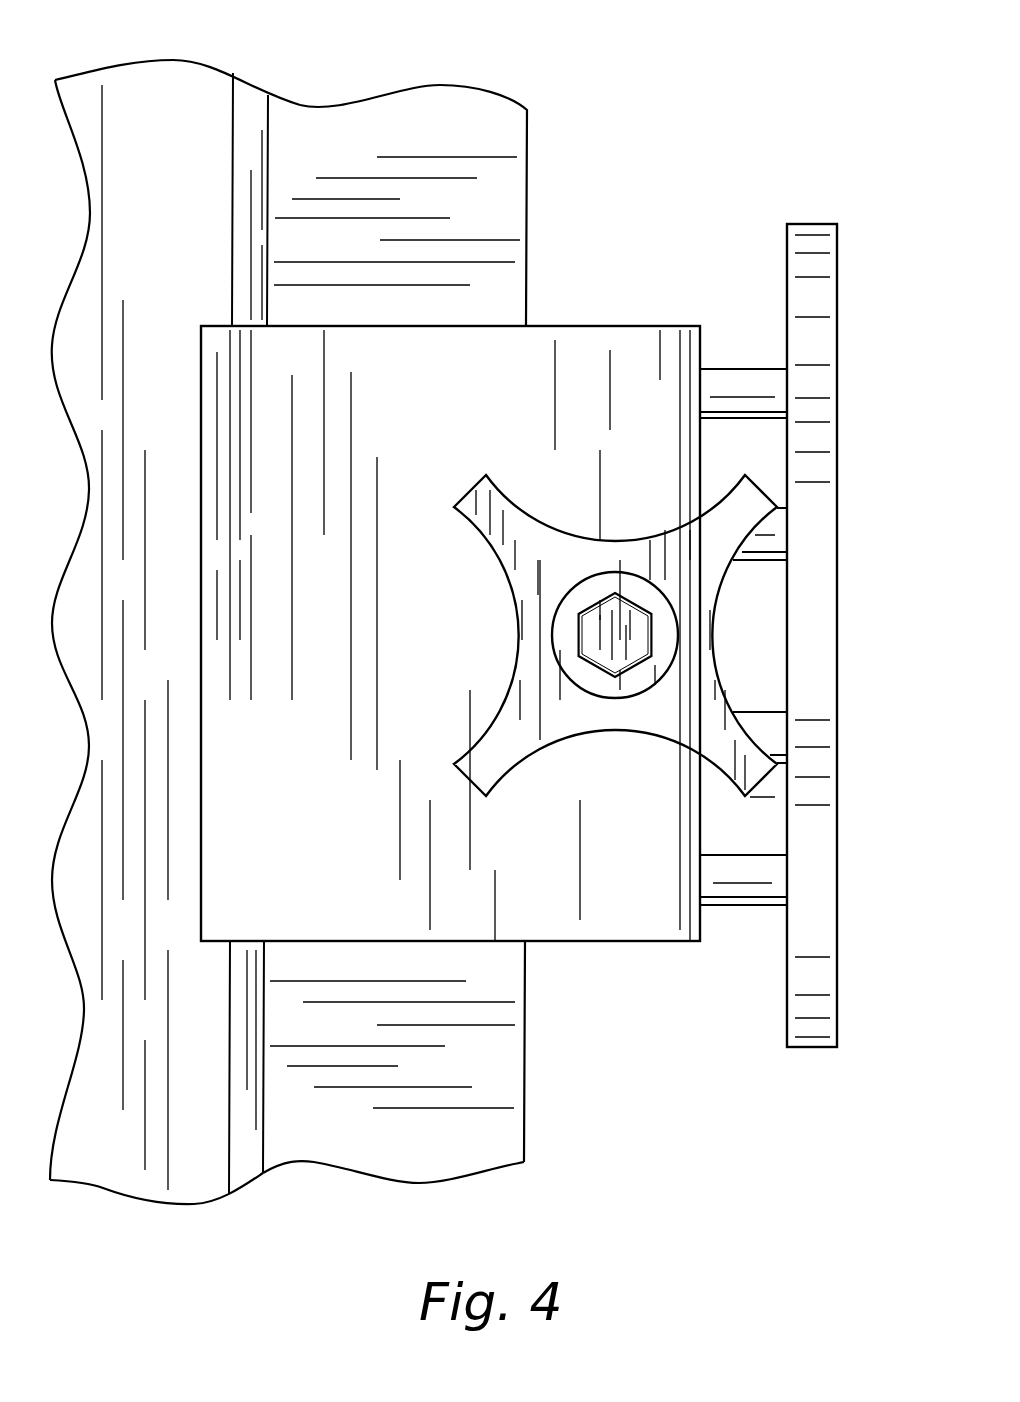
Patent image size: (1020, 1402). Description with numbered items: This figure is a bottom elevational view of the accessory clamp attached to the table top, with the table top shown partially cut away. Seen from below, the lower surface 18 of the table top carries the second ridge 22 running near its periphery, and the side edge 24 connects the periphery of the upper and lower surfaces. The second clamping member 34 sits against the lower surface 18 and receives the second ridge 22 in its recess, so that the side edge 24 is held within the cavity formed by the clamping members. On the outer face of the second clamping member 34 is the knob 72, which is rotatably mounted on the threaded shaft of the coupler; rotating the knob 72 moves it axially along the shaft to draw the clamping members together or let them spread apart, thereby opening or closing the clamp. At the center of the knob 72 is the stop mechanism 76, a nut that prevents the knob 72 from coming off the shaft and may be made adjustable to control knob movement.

The lower surface 18 is at (124, 1159).
The second ridge 22 is at (253, 158).
The side edge 24 is at (448, 130).
The second clamping member 34 is at (490, 405).
The knob 72 is at (732, 772).
The stop mechanism 76 is at (638, 630).